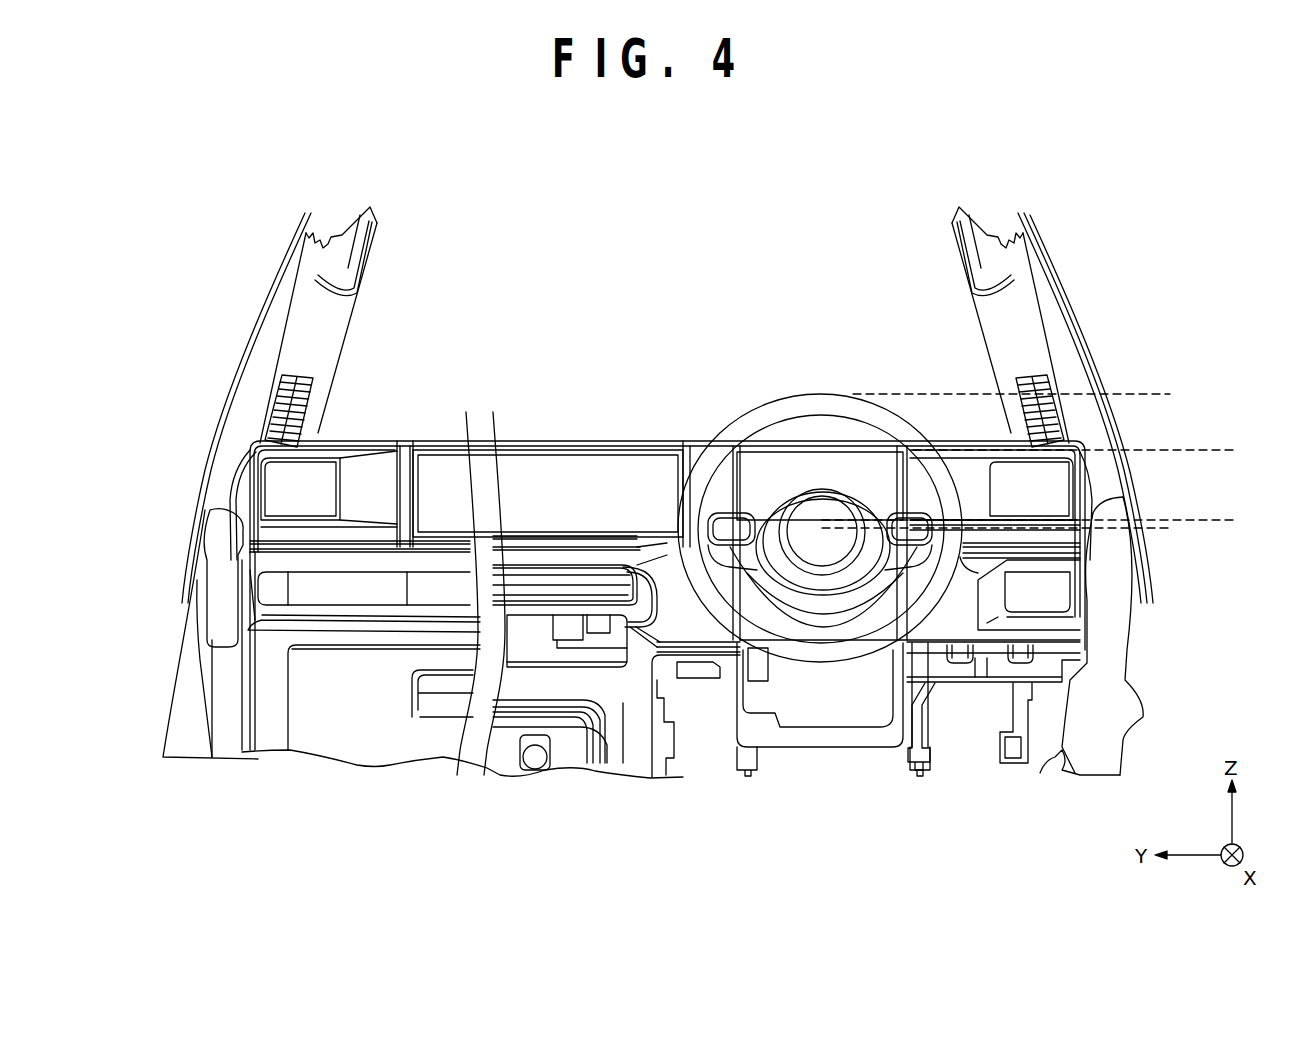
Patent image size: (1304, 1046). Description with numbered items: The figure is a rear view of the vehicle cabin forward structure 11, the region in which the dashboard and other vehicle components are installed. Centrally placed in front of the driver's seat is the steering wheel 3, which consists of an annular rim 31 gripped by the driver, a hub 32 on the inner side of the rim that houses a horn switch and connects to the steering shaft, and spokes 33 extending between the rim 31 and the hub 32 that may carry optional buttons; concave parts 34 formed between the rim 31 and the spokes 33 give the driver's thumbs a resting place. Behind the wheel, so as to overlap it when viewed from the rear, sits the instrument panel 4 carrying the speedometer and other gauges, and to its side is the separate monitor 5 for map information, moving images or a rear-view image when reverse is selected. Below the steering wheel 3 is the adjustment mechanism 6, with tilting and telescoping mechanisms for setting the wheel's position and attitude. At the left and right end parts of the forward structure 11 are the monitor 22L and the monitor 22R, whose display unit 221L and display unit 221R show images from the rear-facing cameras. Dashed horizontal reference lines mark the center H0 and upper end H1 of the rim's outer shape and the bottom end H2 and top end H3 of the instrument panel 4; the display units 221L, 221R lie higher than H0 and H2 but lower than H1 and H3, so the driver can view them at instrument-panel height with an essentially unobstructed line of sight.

The vehicle cabin forward structure 11 is at (312, 128).
The steering wheel 3 is at (708, 328).
The rim 31 is at (730, 410).
The instrument panel 4 is at (760, 470).
The hub 32 is at (815, 490).
The spokes 33 is at (881, 490).
The concave parts 34 is at (925, 500).
The monitor 5 is at (612, 470).
The adjustment mechanism 6 is at (820, 697).
The monitor 22L is at (258, 447).
The monitor 22R is at (1077, 450).
The display unit 221L is at (280, 483).
The display unit 221R is at (1052, 483).
The center of the steering wheel H0 is at (1014, 538).
The upper end of the steering wheel H1 is at (1030, 395).
The bottom end of the instrument panel H2 is at (1047, 522).
The top end of the instrument panel H3 is at (1092, 452).